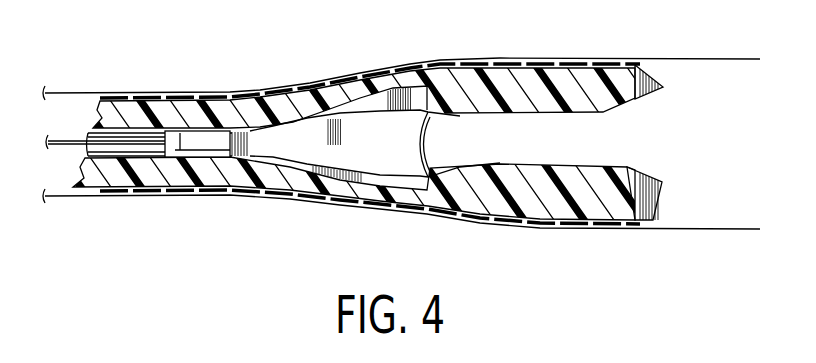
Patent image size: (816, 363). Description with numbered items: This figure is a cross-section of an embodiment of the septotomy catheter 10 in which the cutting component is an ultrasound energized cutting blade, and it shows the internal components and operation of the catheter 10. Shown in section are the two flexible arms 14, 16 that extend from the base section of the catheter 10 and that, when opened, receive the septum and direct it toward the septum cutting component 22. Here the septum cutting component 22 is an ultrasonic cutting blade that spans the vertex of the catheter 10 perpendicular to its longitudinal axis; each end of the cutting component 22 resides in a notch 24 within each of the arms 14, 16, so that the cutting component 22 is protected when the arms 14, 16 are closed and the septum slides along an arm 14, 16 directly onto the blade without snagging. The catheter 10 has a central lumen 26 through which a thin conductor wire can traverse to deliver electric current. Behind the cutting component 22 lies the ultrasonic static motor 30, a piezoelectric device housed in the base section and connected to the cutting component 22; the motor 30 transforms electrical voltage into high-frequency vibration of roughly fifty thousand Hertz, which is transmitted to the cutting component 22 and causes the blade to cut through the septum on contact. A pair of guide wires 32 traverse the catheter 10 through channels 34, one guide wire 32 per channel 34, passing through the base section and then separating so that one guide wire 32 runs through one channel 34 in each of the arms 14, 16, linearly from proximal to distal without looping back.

The septotomy catheter 10 is at (89, 52).
The flexible arm 14 is at (513, 57).
The flexible arm 16 is at (513, 227).
The septum cutting component 22 is at (384, 150).
The notch 24 is at (368, 103).
The central lumen 26 is at (88, 149).
The ultrasonic static motor 30 is at (178, 165).
The guide wire 32 is at (701, 62).
The channel 34 is at (583, 57).